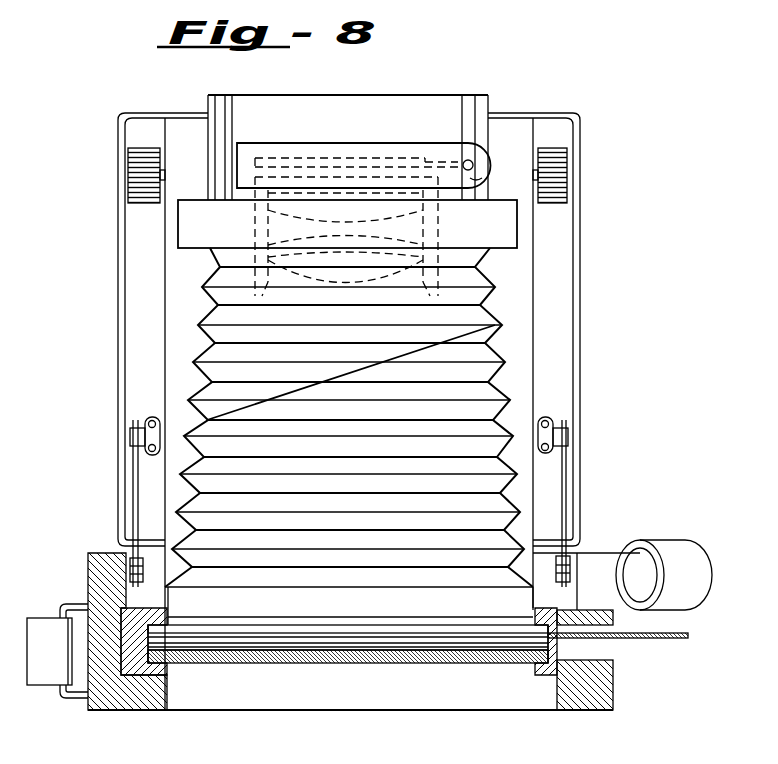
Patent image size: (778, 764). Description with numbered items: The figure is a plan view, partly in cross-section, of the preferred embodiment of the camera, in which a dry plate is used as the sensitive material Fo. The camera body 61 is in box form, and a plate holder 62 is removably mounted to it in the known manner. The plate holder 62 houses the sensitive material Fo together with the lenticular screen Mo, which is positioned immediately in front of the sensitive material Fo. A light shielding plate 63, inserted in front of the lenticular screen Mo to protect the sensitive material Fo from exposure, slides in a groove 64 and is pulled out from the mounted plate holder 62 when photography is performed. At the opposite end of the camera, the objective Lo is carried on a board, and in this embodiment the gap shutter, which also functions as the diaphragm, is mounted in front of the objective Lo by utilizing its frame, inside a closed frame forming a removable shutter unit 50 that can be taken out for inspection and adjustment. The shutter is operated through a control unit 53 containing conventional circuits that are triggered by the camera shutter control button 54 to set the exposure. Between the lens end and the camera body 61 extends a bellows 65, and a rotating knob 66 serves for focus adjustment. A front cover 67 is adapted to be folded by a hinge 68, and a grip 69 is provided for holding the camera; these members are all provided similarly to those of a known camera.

The objective Lo is at (303, 218).
The lens mount arm 50 is at (383, 155).
The camera shutter control button 54 is at (473, 163).
The control unit 53 is at (478, 175).
The rotating knob for focus adjustment 66 is at (567, 168).
The bellows 65 is at (215, 343).
The front cover 67 is at (560, 365).
The hinge 68 is at (568, 490).
The grip 69 is at (677, 547).
The light shielding plate 63 is at (687, 640).
The camera body 61 is at (562, 698).
The plate holder 62 is at (443, 663).
The sensitive material Fo is at (363, 665).
The lenticular screen Mo is at (330, 632).
The groove 64 is at (241, 625).